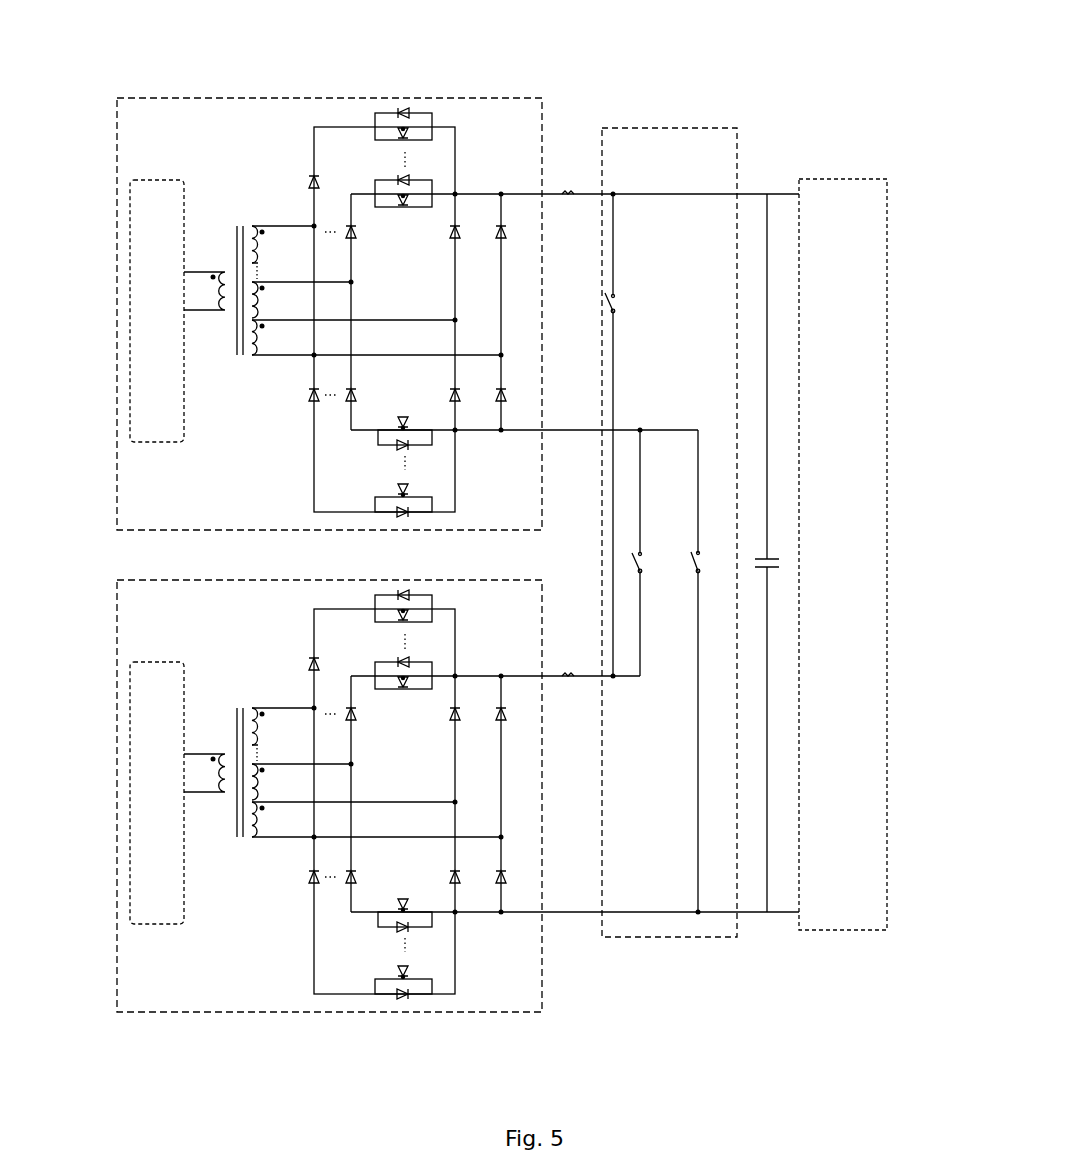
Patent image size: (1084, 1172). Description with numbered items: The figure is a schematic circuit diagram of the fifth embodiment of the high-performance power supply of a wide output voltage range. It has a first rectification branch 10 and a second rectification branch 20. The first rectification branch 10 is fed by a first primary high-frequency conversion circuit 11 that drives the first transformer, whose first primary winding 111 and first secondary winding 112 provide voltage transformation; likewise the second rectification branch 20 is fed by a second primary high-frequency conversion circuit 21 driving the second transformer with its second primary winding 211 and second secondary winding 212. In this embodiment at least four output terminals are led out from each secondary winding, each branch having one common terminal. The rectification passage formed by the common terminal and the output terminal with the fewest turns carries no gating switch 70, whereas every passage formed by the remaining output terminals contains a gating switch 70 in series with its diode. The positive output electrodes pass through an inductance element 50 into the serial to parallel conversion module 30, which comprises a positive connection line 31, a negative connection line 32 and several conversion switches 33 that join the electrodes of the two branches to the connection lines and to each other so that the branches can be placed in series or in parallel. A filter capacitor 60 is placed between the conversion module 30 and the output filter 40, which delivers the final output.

The first rectification branch 10 is at (300, 275).
The first primary high-frequency conversion circuit 11 is at (140, 212).
The first primary winding 111 is at (226, 274).
The first secondary winding 112 is at (262, 226).
The gating switch 70 is at (372, 140).
The inductance element 50 is at (572, 192).
The serial to parallel conversion module 30 is at (671, 523).
The positive connection line 31 is at (700, 194).
The negative connection line 32 is at (668, 937).
The conversion switch 33 is at (615, 290).
The output filter 40 is at (862, 318).
The filter capacitor 60 is at (780, 556).
The second rectification branch 20 is at (300, 828).
The second primary high-frequency conversion circuit 21 is at (140, 698).
The second primary winding 211 is at (226, 756).
The second secondary winding 212 is at (262, 708).